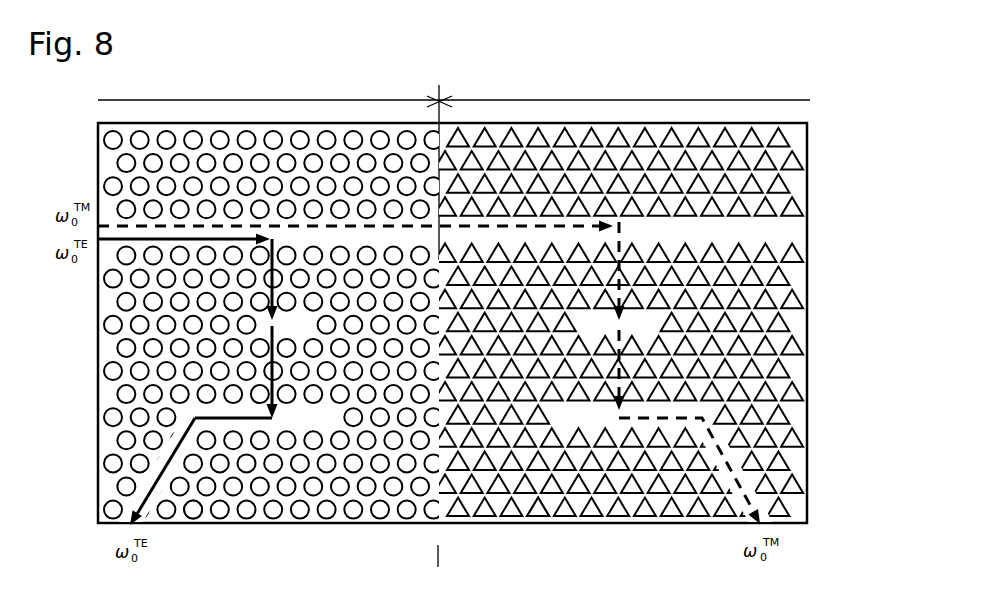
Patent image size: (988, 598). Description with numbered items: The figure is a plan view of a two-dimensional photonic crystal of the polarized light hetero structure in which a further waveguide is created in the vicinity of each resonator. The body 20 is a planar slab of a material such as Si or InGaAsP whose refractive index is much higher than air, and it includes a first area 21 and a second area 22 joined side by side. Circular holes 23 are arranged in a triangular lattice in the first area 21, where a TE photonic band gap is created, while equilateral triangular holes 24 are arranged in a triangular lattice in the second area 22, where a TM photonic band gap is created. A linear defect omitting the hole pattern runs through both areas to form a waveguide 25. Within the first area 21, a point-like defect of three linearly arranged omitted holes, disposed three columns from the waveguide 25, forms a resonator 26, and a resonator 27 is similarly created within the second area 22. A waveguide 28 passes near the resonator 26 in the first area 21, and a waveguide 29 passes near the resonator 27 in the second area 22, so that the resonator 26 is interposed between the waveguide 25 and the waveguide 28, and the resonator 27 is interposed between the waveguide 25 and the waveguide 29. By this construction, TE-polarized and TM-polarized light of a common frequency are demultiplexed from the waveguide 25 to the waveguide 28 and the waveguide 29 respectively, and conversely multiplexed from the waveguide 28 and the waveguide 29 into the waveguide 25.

The body 20 is at (798, 135).
The first area 21 is at (275, 322).
The second area 22 is at (622, 297).
The circular hole 23 is at (195, 508).
The equilateral triangular hole 24 is at (537, 508).
The waveguide 25 is at (785, 230).
The resonator 26 is at (288, 320).
The resonator 27 is at (632, 318).
The waveguide 28 is at (250, 423).
The waveguide 29 is at (630, 430).